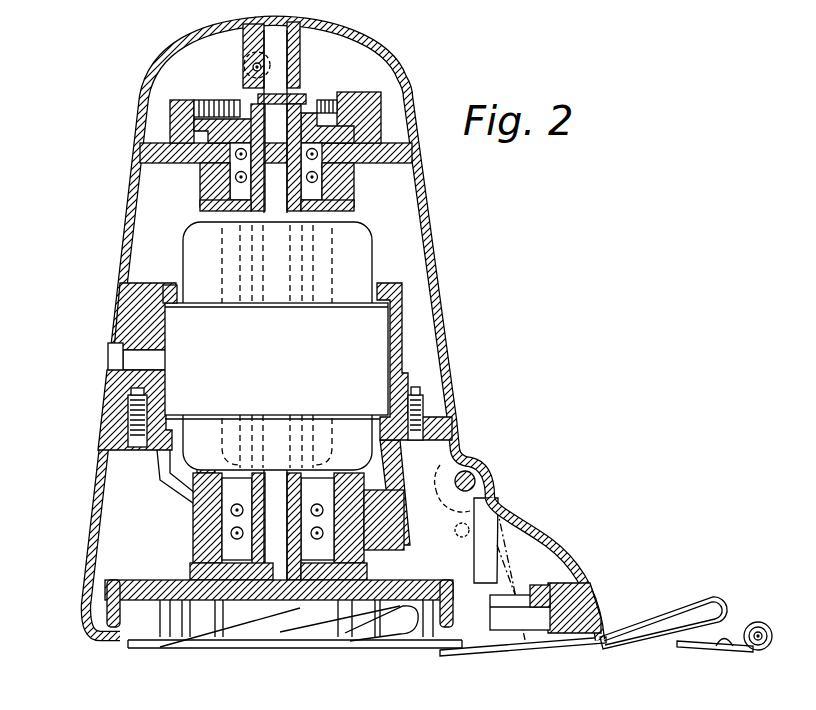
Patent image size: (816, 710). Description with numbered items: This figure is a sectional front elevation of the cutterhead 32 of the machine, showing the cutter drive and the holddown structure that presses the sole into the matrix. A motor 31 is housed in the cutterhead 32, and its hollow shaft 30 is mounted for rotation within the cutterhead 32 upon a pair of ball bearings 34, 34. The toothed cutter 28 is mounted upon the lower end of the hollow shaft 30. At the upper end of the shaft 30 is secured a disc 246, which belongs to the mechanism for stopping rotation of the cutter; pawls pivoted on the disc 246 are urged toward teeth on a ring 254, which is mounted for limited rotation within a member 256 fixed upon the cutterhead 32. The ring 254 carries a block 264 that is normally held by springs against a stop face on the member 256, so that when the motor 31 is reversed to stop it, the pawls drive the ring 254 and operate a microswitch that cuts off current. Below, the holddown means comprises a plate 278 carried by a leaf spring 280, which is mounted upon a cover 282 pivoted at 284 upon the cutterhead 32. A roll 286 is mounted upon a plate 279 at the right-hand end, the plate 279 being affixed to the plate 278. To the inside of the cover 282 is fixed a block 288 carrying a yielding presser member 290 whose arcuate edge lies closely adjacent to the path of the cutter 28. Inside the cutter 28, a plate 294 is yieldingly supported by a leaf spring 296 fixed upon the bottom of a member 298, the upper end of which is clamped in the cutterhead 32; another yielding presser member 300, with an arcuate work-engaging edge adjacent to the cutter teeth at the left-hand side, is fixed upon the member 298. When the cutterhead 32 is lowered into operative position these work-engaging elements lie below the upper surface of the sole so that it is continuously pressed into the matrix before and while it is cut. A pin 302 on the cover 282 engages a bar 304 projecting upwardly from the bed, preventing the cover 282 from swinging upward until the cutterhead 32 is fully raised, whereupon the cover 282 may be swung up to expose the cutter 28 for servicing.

The cutter 28 is at (125, 598).
The hollow shaft 30 is at (243, 213).
The motor 31 is at (377, 342).
The cutterhead 32 is at (431, 227).
The ball bearings 34 is at (228, 165).
The disc 246 is at (194, 125).
The ring 254 is at (189, 100).
The member 256 is at (170, 107).
The block 264 is at (362, 92).
The plate 278 is at (653, 648).
The plate 279 is at (733, 646).
The leaf spring 280 is at (687, 591).
The cover 282 is at (588, 557).
The pivot 284 is at (467, 469).
The roll 286 is at (760, 621).
The block 288 is at (589, 583).
The yielding presser member 290 is at (470, 648).
The plate 294 is at (226, 643).
The leaf spring 296 is at (362, 633).
The member 298 is at (205, 551).
The yielding presser member 300 is at (158, 633).
The pin 302 is at (468, 527).
The bar 304 is at (500, 546).